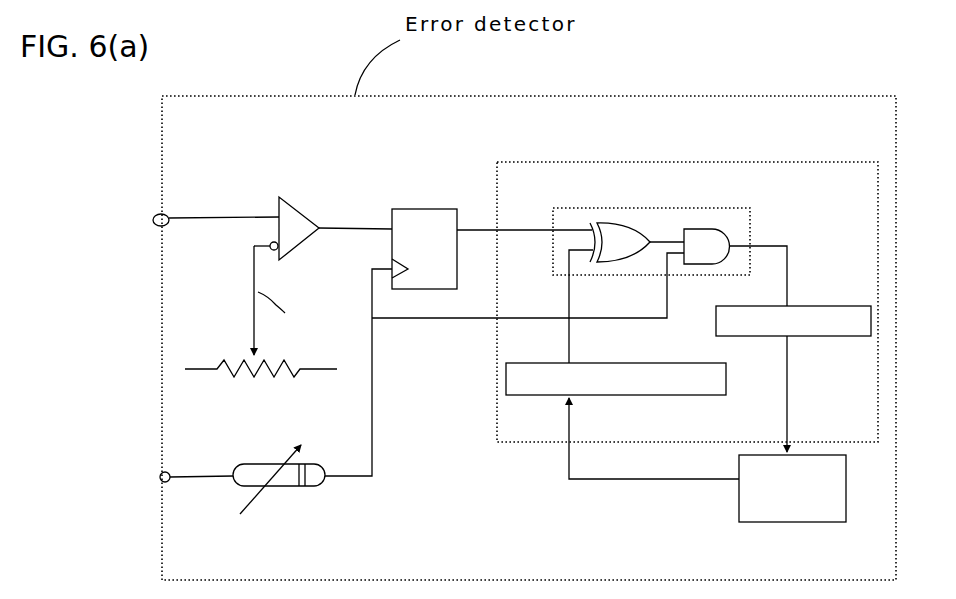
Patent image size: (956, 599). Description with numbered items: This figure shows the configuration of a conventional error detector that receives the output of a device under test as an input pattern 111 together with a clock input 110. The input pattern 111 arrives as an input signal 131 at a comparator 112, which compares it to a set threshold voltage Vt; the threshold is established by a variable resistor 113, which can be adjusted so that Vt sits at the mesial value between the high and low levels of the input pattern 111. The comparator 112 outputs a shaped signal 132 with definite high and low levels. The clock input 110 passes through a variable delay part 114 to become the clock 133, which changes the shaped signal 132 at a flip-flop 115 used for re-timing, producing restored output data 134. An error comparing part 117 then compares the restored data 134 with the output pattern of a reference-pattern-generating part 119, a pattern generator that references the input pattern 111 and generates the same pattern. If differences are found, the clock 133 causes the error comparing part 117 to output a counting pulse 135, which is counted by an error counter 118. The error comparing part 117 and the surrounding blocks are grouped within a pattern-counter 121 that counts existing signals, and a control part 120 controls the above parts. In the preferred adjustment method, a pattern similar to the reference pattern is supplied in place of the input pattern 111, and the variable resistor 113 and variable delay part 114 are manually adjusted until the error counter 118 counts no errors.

The clock input 110 is at (156, 492).
The input pattern 111 is at (145, 235).
The comparator 112 is at (302, 206).
The variable resistor 113 is at (254, 332).
The variable delay part 114 is at (287, 486).
The flip-flop 115 is at (432, 208).
The error comparing part 117 is at (632, 216).
The error counter 118 is at (846, 289).
The reference-pattern-generating part 119 is at (552, 398).
The control part 120 is at (776, 517).
The pattern-counter 121 is at (598, 161).
The input pattern signal 131 is at (266, 210).
The shaped signal 132 is at (366, 220).
The clock input 133 is at (387, 432).
The restored output data 134 is at (538, 226).
The counting pulse 135 is at (794, 238).